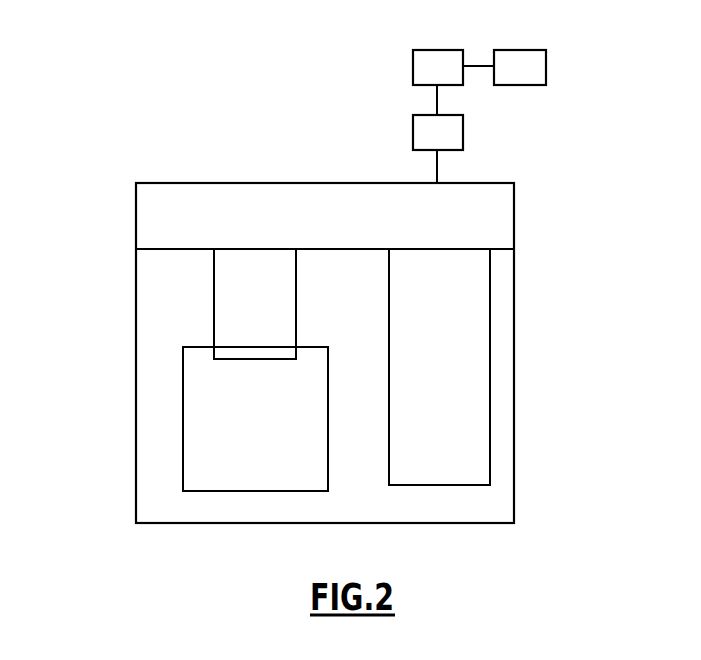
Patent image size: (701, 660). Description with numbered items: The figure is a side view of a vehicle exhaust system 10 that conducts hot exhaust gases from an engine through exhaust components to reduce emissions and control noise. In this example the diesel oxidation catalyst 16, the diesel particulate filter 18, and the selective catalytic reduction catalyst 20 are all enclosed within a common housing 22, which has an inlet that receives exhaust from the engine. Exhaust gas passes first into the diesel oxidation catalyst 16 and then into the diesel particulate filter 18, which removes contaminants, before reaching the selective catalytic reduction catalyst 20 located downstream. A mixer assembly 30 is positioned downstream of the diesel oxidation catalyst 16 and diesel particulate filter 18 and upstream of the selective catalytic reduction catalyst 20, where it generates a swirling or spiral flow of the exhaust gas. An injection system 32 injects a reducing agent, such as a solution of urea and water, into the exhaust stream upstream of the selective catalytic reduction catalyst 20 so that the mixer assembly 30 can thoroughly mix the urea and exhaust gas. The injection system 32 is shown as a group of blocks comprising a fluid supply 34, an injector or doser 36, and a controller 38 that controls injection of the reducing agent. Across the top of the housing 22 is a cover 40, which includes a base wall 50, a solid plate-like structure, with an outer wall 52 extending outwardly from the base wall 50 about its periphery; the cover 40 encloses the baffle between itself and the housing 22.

The vehicle exhaust system 10 is at (580, 172).
The diesel oxidation catalyst 16 is at (244, 443).
The diesel particulate filter 18 is at (244, 320).
The selective catalytic reduction catalyst 20 is at (425, 383).
The housing 22 is at (514, 353).
The mixer assembly 30 is at (221, 198).
The injection system 32 is at (400, 33).
The fluid supply 34 is at (424, 80).
The injector or doser 36 is at (424, 145).
The controller 38 is at (506, 80).
The cover 40 is at (136, 213).
The base wall 50 is at (284, 183).
The outer wall 52 is at (514, 217).